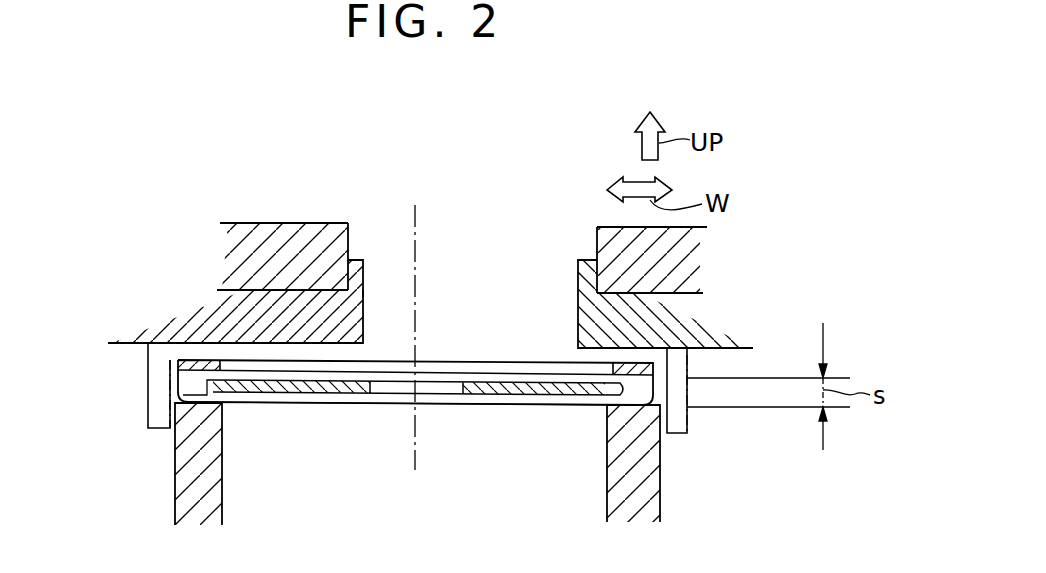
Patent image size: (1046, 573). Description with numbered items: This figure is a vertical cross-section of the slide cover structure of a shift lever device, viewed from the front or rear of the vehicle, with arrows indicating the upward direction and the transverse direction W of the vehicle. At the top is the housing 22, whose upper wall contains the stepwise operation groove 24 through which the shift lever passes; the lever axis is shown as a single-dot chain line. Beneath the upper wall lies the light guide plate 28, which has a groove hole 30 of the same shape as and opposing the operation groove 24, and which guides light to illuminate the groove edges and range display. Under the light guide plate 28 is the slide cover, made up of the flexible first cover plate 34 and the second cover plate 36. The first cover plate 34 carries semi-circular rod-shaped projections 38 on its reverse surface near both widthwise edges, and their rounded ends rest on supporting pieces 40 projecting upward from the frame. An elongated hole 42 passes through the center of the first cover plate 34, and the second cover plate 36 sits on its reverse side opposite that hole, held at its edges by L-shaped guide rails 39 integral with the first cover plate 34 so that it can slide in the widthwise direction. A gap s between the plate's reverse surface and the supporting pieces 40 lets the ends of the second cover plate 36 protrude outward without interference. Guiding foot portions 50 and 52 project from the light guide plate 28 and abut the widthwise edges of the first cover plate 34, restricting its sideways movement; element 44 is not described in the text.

The housing 22 is at (298, 224).
The operation groove 24 is at (348, 237).
The light guide plate 28 is at (147, 317).
The groove hole 30 is at (363, 297).
The first cover plate 34 is at (654, 375).
The second cover plate 36 is at (540, 394).
The projections 38 is at (225, 403).
The guide rails 39 is at (377, 398).
The supporting pieces 40 is at (187, 485).
The elongated hole 42 is at (613, 365).
The middle layer 44 is at (463, 392).
The guiding foot portion 50 is at (146, 410).
The guiding foot portion 52 is at (690, 367).